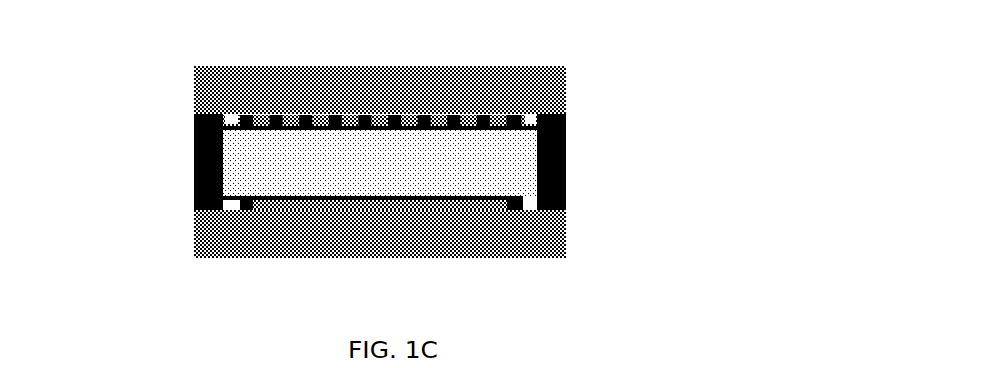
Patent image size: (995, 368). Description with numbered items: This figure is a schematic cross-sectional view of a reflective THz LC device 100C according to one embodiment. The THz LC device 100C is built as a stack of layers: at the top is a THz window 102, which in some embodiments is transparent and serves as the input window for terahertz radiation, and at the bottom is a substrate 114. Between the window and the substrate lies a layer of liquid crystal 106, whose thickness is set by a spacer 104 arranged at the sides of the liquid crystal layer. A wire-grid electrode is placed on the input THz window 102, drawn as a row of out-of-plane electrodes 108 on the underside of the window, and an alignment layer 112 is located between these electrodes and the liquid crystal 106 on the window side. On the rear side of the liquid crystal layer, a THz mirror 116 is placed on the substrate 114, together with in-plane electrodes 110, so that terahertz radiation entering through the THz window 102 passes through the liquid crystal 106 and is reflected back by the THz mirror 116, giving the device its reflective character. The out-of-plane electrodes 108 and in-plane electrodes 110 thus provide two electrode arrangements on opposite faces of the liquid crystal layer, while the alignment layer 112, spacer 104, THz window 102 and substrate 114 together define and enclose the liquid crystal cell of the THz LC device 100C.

The reflective THz LC device 100C is at (412, 155).
The THz window 102 is at (218, 87).
The spacer 104 is at (541, 188).
The liquid crystal 106 is at (268, 162).
The out-of-plane electrodes 108 is at (500, 120).
The in-plane electrodes 110 is at (537, 209).
The alignment layer 112 is at (515, 125).
The substrate 114 is at (218, 234).
The THz mirror 116 is at (382, 200).